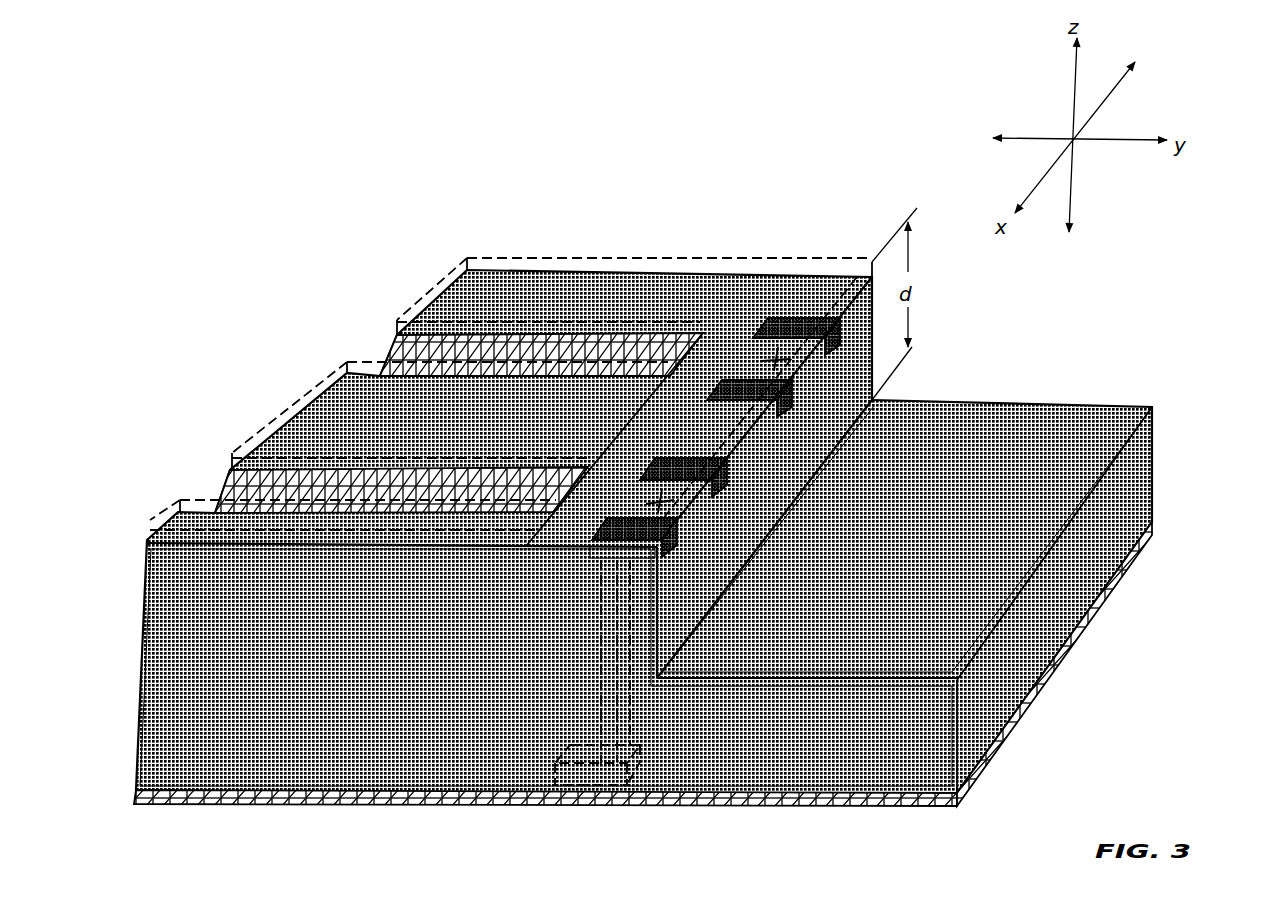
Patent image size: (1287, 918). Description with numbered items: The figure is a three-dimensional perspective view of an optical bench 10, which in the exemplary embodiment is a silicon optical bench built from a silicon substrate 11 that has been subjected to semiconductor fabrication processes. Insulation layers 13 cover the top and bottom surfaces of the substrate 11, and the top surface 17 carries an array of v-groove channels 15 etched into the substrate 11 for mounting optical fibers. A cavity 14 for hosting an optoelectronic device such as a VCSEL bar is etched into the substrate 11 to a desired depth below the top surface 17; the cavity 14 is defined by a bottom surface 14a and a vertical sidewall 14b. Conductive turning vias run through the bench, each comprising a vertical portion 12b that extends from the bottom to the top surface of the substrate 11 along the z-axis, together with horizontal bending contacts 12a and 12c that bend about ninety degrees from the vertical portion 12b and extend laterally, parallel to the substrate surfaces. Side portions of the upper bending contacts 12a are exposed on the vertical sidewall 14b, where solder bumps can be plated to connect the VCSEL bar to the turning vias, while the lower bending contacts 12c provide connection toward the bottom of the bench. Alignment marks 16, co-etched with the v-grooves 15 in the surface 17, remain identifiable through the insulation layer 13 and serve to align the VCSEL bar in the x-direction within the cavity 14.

The optical bench 10 is at (138, 650).
The silicon substrate 11 is at (264, 603).
The upper bending contact 12a is at (632, 526).
The vertical portion 12b is at (607, 647).
The lower bending contact 12c is at (565, 753).
The insulation layer 13 is at (462, 262).
The cavity 14 is at (888, 503).
The bottom surface 14a is at (948, 618).
The vertical sidewall 14b is at (841, 410).
The v-groove channels 15 is at (417, 360).
The alignment marks 16 is at (776, 350).
The top surface 17 is at (767, 283).